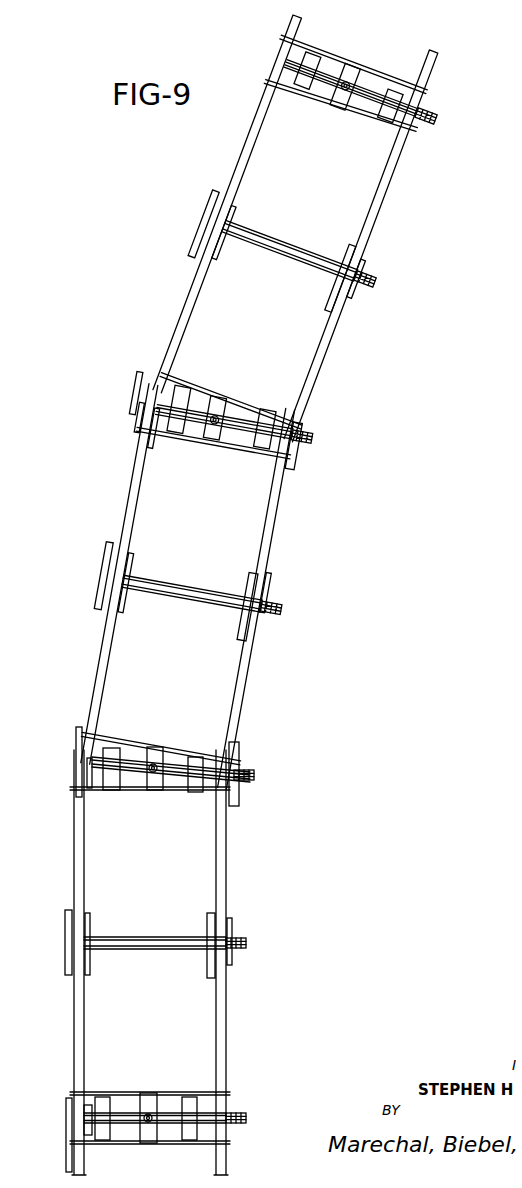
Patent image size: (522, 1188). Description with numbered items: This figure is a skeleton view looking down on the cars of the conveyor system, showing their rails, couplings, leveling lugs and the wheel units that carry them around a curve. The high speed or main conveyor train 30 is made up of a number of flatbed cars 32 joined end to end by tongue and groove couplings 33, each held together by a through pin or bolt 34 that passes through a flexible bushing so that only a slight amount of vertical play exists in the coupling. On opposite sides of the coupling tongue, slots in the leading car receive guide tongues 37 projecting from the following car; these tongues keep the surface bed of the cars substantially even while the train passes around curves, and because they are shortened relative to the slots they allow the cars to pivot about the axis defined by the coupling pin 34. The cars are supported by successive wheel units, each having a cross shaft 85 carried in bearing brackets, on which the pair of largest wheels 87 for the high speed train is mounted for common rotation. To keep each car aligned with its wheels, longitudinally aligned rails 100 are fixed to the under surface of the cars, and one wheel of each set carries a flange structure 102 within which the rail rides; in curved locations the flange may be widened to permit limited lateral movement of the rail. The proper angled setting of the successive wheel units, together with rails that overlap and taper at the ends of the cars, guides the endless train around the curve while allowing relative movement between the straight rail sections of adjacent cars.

The high speed or main conveyor train 30 is at (166, 180).
The car 32 is at (388, 197).
The tongue and groove coupling 33 is at (359, 78).
The coupling pin 34 is at (345, 83).
The guide tongue 37 is at (184, 389).
The cross shaft 85 is at (424, 118).
The largest wheels 87 is at (200, 238).
The rail 100 is at (392, 160).
The flange structure 102 is at (192, 253).